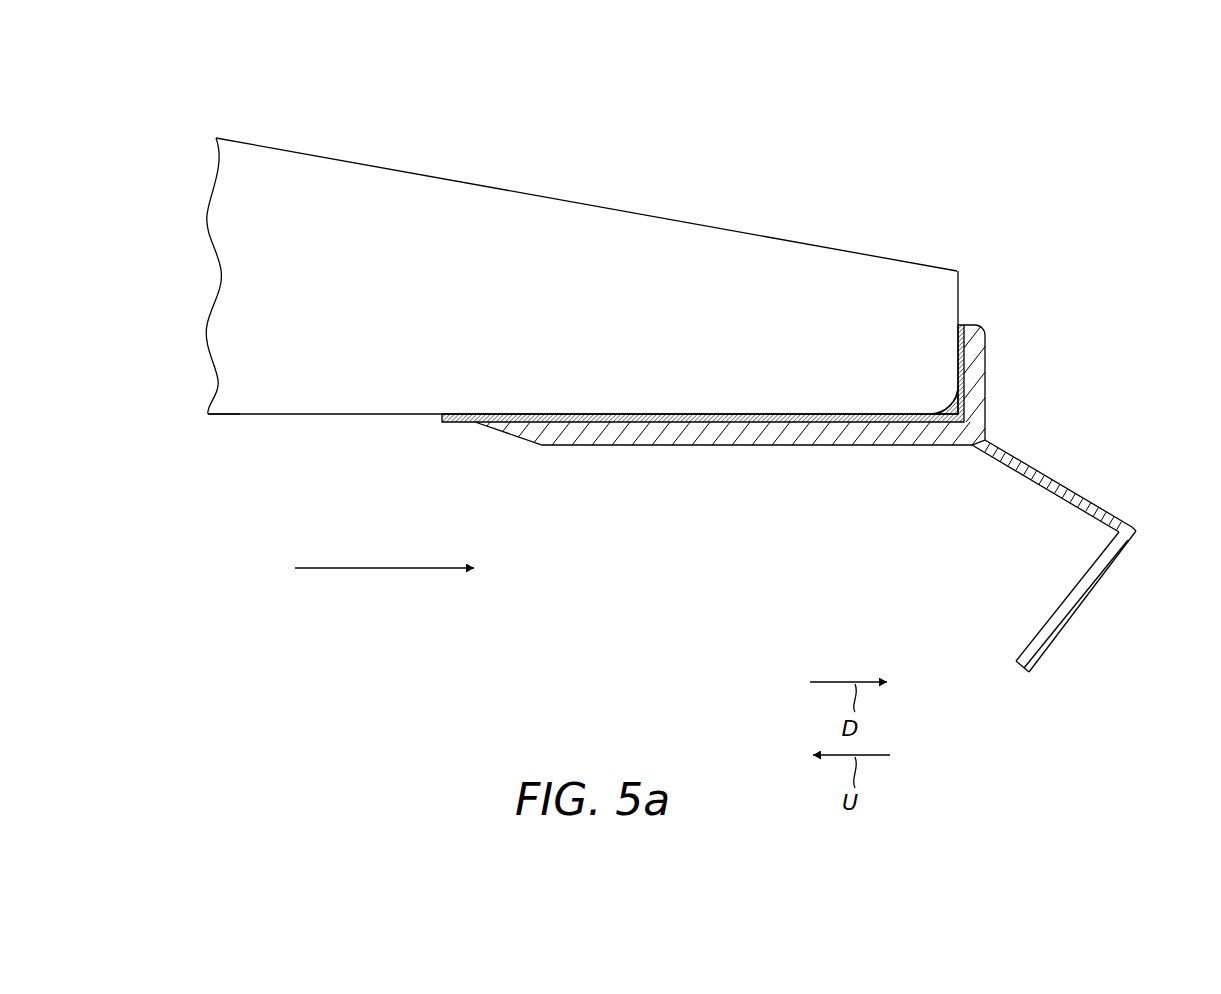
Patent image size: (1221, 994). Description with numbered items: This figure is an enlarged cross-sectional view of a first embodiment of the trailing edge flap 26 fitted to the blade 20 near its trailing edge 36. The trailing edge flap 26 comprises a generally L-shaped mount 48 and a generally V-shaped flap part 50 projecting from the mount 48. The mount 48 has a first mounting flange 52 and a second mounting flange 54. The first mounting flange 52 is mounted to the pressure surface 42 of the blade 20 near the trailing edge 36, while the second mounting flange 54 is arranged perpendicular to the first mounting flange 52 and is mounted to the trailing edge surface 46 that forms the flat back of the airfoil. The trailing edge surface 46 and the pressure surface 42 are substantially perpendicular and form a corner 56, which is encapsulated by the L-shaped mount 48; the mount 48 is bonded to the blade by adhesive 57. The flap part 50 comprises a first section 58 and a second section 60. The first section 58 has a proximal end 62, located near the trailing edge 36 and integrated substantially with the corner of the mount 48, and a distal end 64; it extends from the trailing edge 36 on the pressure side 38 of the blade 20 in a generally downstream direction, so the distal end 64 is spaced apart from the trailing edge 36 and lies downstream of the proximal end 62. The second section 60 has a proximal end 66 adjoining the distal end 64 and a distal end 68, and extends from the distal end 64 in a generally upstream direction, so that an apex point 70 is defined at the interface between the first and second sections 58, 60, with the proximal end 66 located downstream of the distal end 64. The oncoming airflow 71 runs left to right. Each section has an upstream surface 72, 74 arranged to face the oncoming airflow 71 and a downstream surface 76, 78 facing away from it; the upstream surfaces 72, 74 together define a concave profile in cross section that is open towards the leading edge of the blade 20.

The blade 20 is at (615, 233).
The trailing edge flap 26 is at (677, 553).
The trailing edge 36 is at (834, 522).
The pressure side 38 is at (321, 470).
The pressure surface 42 is at (242, 416).
The trailing edge surface 46 is at (961, 273).
The L-shaped mount 48 is at (597, 470).
The V-shaped flap part 50 is at (1058, 692).
The first mounting flange 52 is at (704, 446).
The second mounting flange 54 is at (986, 357).
The corner 56 is at (936, 396).
The adhesive 57 is at (660, 414).
The first section 58 is at (1085, 483).
The second section 60 is at (1069, 606).
The proximal end 62 is at (975, 455).
The distal end 64 is at (1118, 515).
The proximal end 66 is at (1126, 549).
The distal end 68 is at (1017, 648).
The apex point 70 is at (1139, 529).
The oncoming airflow 71 is at (386, 571).
The upstream surface 72 is at (1023, 478).
The upstream surface 74 is at (1061, 600).
The downstream surface 76 is at (1072, 489).
The downstream surface 78 is at (1089, 598).